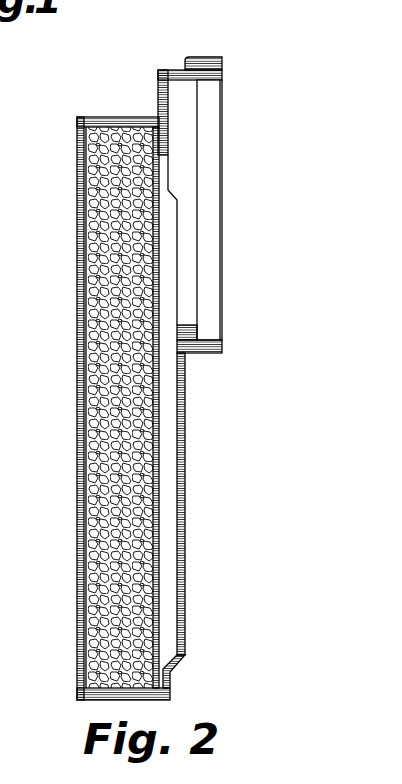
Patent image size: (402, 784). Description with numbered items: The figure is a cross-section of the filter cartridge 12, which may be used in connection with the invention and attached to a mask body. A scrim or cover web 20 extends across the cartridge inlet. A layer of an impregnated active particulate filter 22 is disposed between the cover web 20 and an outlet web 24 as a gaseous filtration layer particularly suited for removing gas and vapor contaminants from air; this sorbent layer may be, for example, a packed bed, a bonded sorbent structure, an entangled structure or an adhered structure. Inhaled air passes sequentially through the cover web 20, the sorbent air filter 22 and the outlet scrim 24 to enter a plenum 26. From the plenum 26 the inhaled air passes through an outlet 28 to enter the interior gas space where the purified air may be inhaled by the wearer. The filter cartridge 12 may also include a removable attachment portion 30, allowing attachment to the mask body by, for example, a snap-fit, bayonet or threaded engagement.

The filter cartridge 12 is at (262, 64).
The cover web 20 is at (84, 238).
The impregnated active particulate filter 22 is at (123, 135).
The outlet web 24 is at (160, 480).
The plenum 26 is at (168, 402).
The outlet 28 is at (214, 193).
The removable attachment portion 30 is at (211, 62).